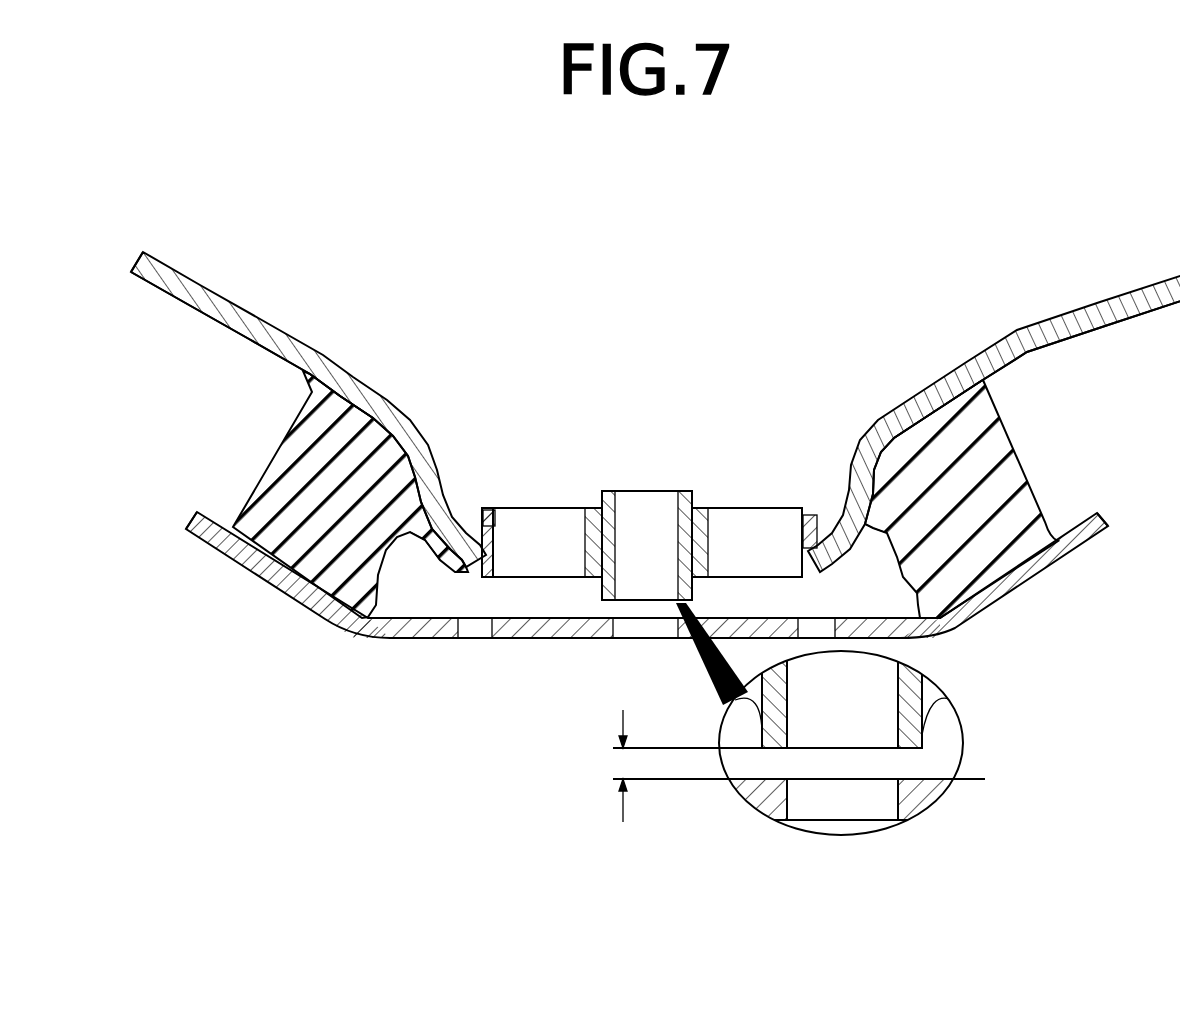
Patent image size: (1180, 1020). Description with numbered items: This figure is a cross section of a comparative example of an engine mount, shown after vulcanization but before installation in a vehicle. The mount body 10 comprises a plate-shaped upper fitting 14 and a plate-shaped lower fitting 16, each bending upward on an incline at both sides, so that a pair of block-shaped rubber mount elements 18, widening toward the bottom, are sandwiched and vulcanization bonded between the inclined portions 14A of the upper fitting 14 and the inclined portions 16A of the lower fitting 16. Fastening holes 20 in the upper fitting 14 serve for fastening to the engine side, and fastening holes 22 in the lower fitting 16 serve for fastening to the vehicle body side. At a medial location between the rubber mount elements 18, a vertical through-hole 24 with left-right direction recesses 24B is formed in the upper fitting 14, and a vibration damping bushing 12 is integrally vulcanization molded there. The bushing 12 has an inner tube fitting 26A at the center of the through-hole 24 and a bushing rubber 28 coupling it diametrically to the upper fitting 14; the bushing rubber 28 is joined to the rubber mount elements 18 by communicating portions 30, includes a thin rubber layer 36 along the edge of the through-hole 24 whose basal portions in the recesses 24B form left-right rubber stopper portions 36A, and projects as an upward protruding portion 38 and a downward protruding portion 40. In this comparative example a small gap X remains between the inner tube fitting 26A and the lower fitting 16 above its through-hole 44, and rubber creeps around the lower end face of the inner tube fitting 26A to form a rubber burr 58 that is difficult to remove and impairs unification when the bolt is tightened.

The mount body 10 is at (320, 677).
The vibration damping bushing 12 is at (690, 480).
The upper fitting 14 is at (655, 382).
The inclined portions of the upper fitting 14A is at (310, 362).
The lower fitting 16 is at (638, 620).
The inclined portions of the lower fitting 16A is at (268, 573).
The rubber mount elements 18 is at (280, 473).
The fastening holes 20 is at (210, 292).
The fastening holes 22 is at (487, 636).
The through-hole 24 is at (487, 530).
The left-right direction recesses 24B is at (810, 527).
The inner tube fitting 26A is at (690, 577).
The bushing rubber 28 is at (624, 562).
The communicating portions 30 is at (447, 540).
The rubber layer 36 is at (492, 543).
The left-right direction rubber stopper portions 36A is at (802, 542).
The protruding portion 38 is at (490, 507).
The protruding portion 40 is at (803, 560).
The through-hole 44 is at (627, 638).
The rubber burr 58 is at (917, 763).